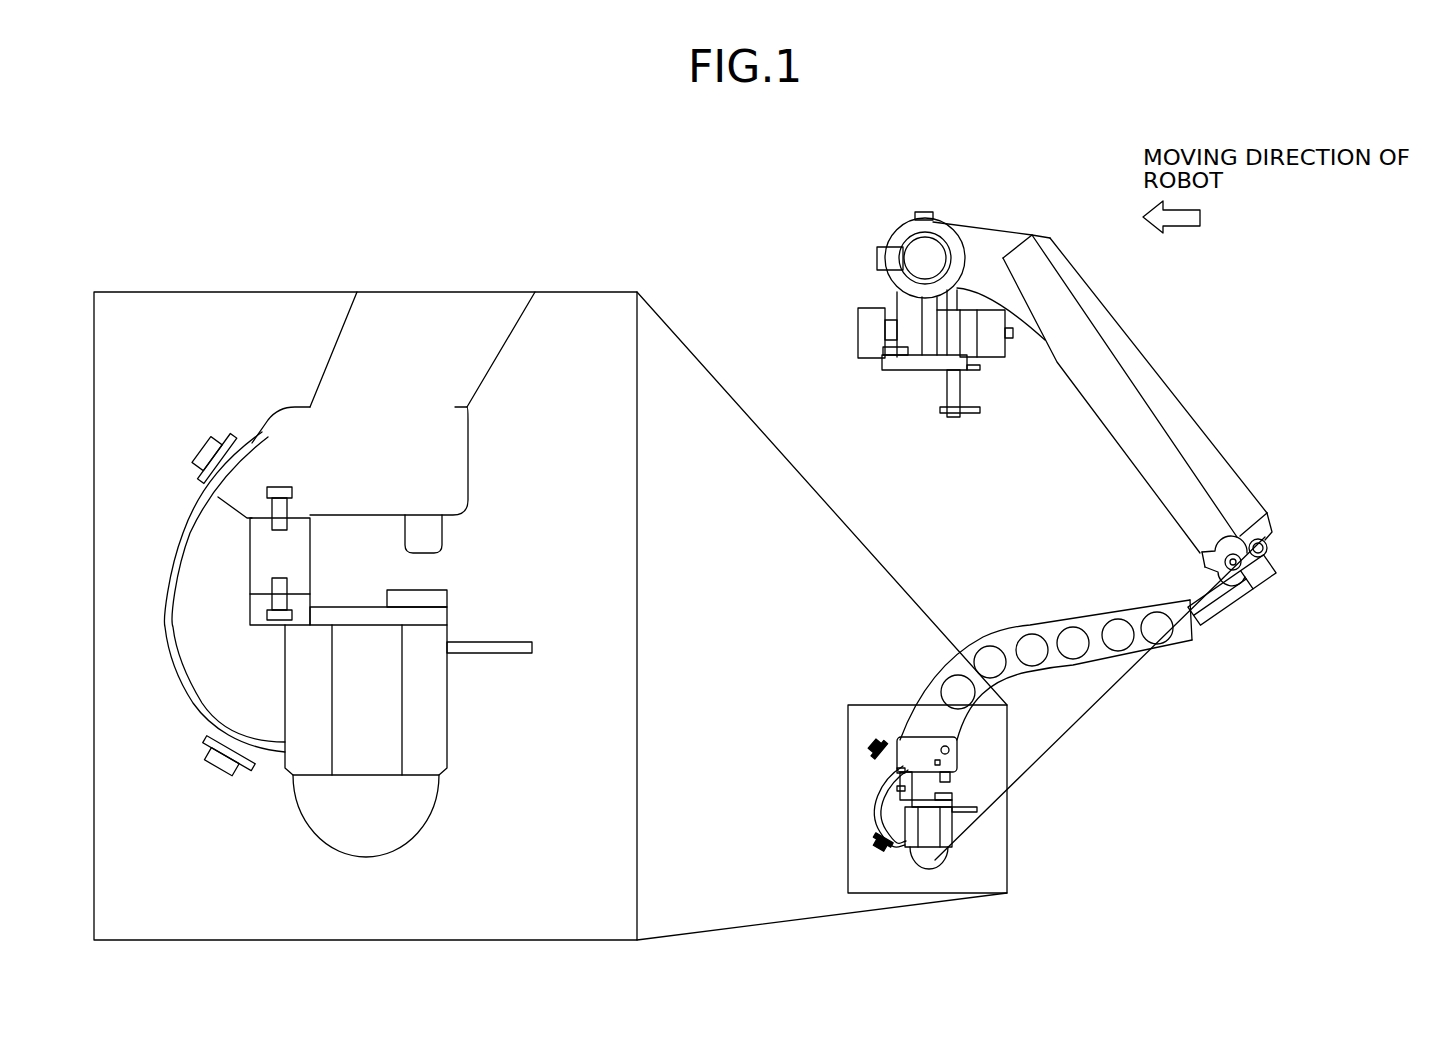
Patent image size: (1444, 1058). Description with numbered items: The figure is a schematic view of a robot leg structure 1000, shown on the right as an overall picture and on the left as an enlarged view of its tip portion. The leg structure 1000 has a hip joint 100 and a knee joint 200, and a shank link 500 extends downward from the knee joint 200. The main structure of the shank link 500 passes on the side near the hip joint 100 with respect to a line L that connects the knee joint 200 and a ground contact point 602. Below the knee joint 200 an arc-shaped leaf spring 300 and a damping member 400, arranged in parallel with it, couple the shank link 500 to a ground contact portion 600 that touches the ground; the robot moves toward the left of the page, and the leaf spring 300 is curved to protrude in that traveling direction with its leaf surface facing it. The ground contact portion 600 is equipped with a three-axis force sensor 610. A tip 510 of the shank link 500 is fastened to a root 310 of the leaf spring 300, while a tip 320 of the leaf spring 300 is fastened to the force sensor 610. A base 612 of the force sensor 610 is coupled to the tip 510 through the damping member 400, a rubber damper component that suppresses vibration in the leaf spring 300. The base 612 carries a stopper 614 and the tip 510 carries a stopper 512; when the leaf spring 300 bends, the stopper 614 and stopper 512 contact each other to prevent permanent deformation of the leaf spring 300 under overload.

The hip joint 100 is at (948, 198).
The knee joint 200 is at (1266, 582).
The leaf spring 300 is at (178, 572).
The root of the leaf spring 310 is at (254, 443).
The tip of the leaf spring 320 is at (270, 760).
The damping member 400 is at (262, 548).
The shank link 500 is at (1093, 627).
The tip of the shank link 510 is at (460, 455).
The stopper 512 is at (437, 530).
The ground contact portion 600 is at (687, 755).
The ground contact point 602 is at (931, 870).
The 3-axis force sensor 610 is at (437, 716).
The base of the 3-axis force sensor 612 is at (437, 616).
The stopper 614 is at (425, 593).
The robot leg structure 1000 is at (1272, 948).
The line L is at (1070, 733).